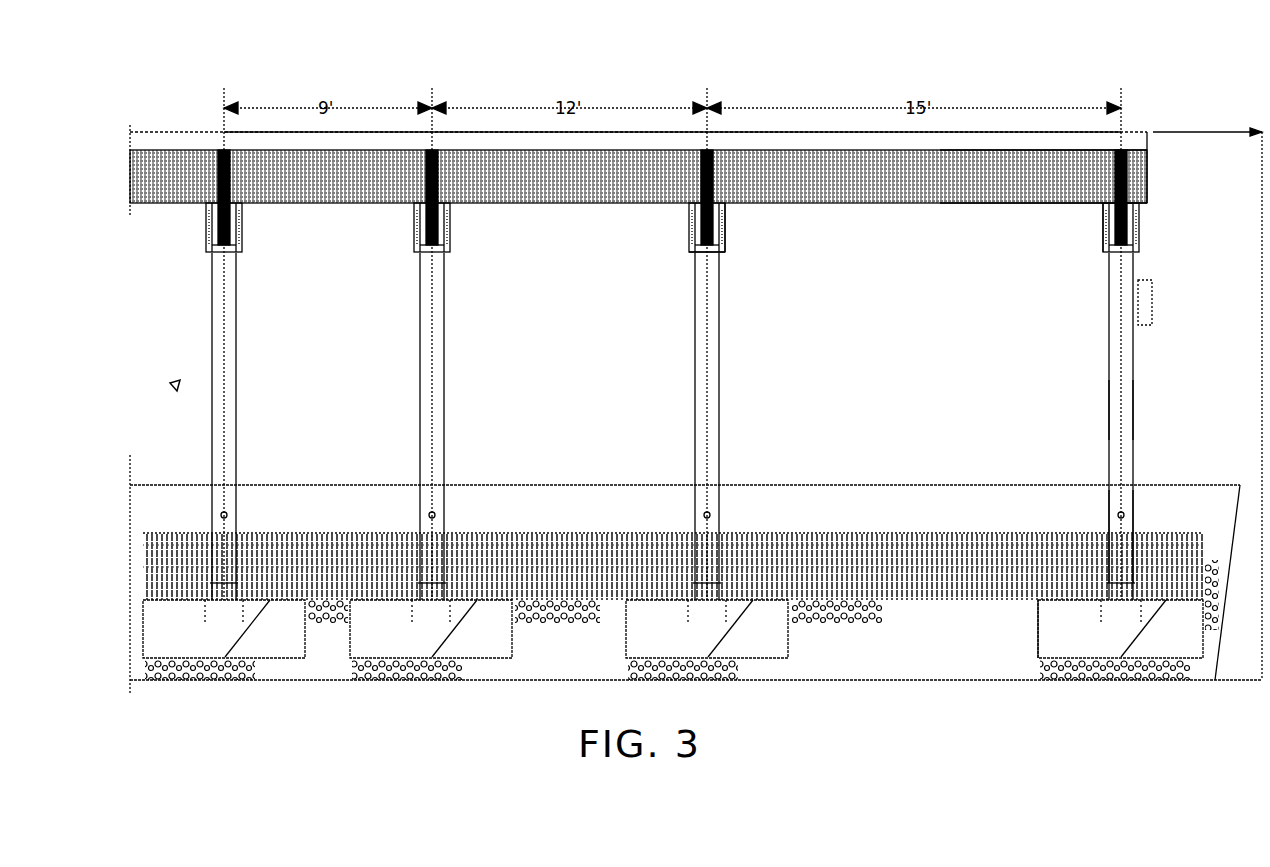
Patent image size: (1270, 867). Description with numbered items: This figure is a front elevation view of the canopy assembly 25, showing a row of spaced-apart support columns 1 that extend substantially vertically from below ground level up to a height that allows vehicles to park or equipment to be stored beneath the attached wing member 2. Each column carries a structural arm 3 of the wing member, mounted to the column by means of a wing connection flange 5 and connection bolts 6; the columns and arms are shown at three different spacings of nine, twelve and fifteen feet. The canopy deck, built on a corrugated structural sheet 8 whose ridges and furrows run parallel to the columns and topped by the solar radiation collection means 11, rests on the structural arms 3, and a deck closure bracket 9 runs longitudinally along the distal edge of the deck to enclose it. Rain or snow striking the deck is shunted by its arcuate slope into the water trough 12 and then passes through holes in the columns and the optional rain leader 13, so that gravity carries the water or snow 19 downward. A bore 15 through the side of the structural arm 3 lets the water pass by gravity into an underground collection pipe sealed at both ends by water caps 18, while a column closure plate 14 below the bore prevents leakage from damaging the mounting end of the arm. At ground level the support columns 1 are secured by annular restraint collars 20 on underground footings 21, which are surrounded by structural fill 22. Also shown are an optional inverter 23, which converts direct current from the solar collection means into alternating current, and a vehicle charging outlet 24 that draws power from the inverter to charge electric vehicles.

The support column 1 is at (1135, 355).
The wing member 2 is at (1207, 404).
The structural arm 3 is at (693, 203).
The wing connection flange 5 is at (697, 252).
The connection bolt 6 is at (727, 237).
The corrugated structural sheet 8 is at (560, 203).
The deck closure bracket 9 is at (785, 132).
The solar radiation collection means 11 is at (515, 530).
The water trough 12 is at (990, 203).
The rain leader 13 is at (1100, 245).
The column closure plate 14 is at (1135, 508).
The bore 15 is at (1107, 508).
The water cap 18 is at (1200, 530).
The water or snow 19 is at (985, 540).
The annular restraint collar 20 is at (1095, 612).
The underground footing 21 is at (1050, 648).
The structural fill 22 is at (1123, 668).
The inverter 23 is at (1152, 300).
The vehicle charging outlet 24 is at (1133, 408).
The canopy assembly 25 is at (150, 362).